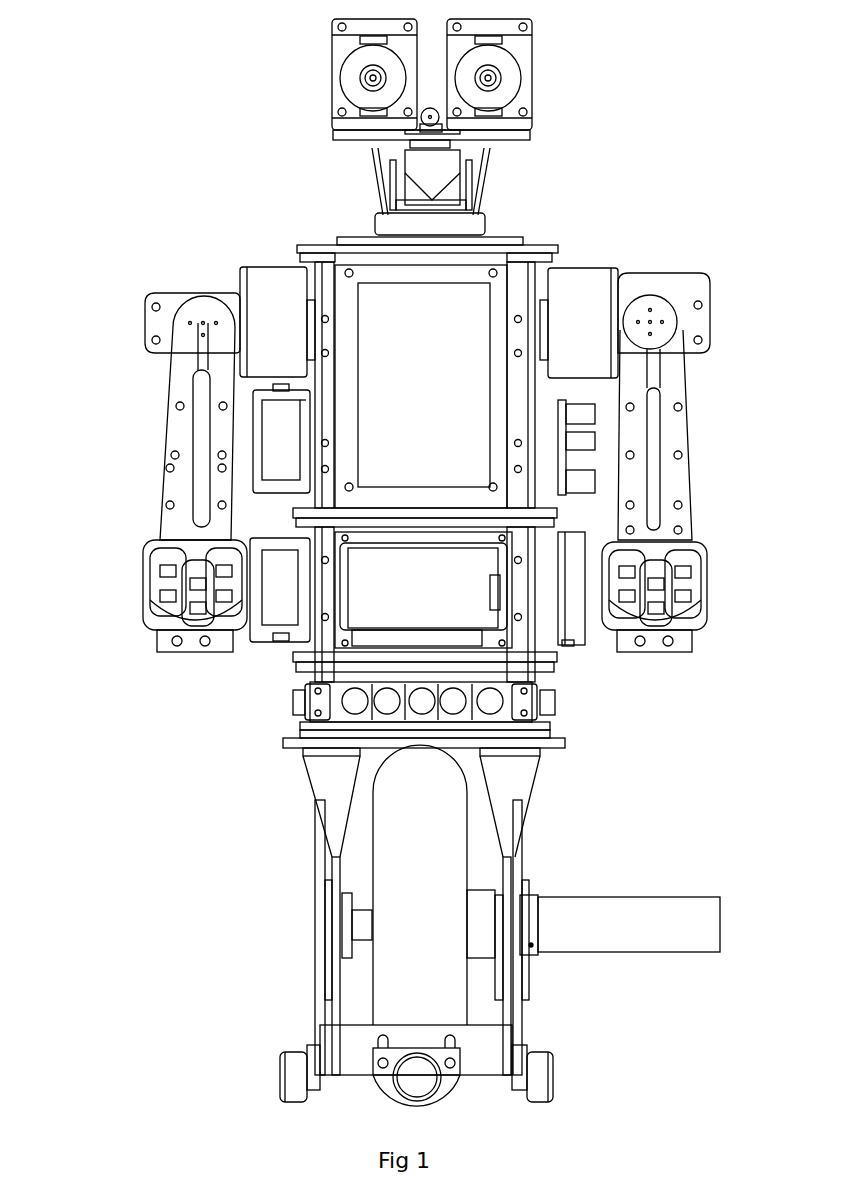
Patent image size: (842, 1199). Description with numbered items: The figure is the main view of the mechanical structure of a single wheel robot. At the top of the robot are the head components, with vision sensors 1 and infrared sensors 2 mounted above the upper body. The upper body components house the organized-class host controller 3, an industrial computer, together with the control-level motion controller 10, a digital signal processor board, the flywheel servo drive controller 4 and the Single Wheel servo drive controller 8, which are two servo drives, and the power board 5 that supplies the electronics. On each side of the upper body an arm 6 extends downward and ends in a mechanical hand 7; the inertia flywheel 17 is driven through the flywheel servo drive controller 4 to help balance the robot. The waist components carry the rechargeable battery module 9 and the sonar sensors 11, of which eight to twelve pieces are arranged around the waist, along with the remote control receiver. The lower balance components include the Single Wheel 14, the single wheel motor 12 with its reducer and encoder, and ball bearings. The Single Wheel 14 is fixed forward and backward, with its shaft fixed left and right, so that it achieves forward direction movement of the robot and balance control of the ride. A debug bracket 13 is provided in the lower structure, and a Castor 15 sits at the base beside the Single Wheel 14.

The vision sensors 1 is at (470, 87).
The infrared sensors 2 is at (497, 140).
The host controller 3 is at (383, 350).
The flywheel servo drive controller 4 is at (211, 356).
The power board 5 is at (683, 422).
The arm 6 is at (141, 416).
The mechanical hands 7 is at (143, 551).
The Single Wheel servo drive controller 8 is at (206, 623).
The rechargeable battery module 9 is at (341, 628).
The motion controller 10 is at (630, 633).
The sonar sensors 11 is at (390, 705).
The single wheel motors 12 is at (644, 882).
The debug bracket 13 is at (261, 911).
The Single Wheel 14 is at (342, 885).
The Castor 15 is at (542, 1078).
The inertia flywheel 17 is at (715, 615).